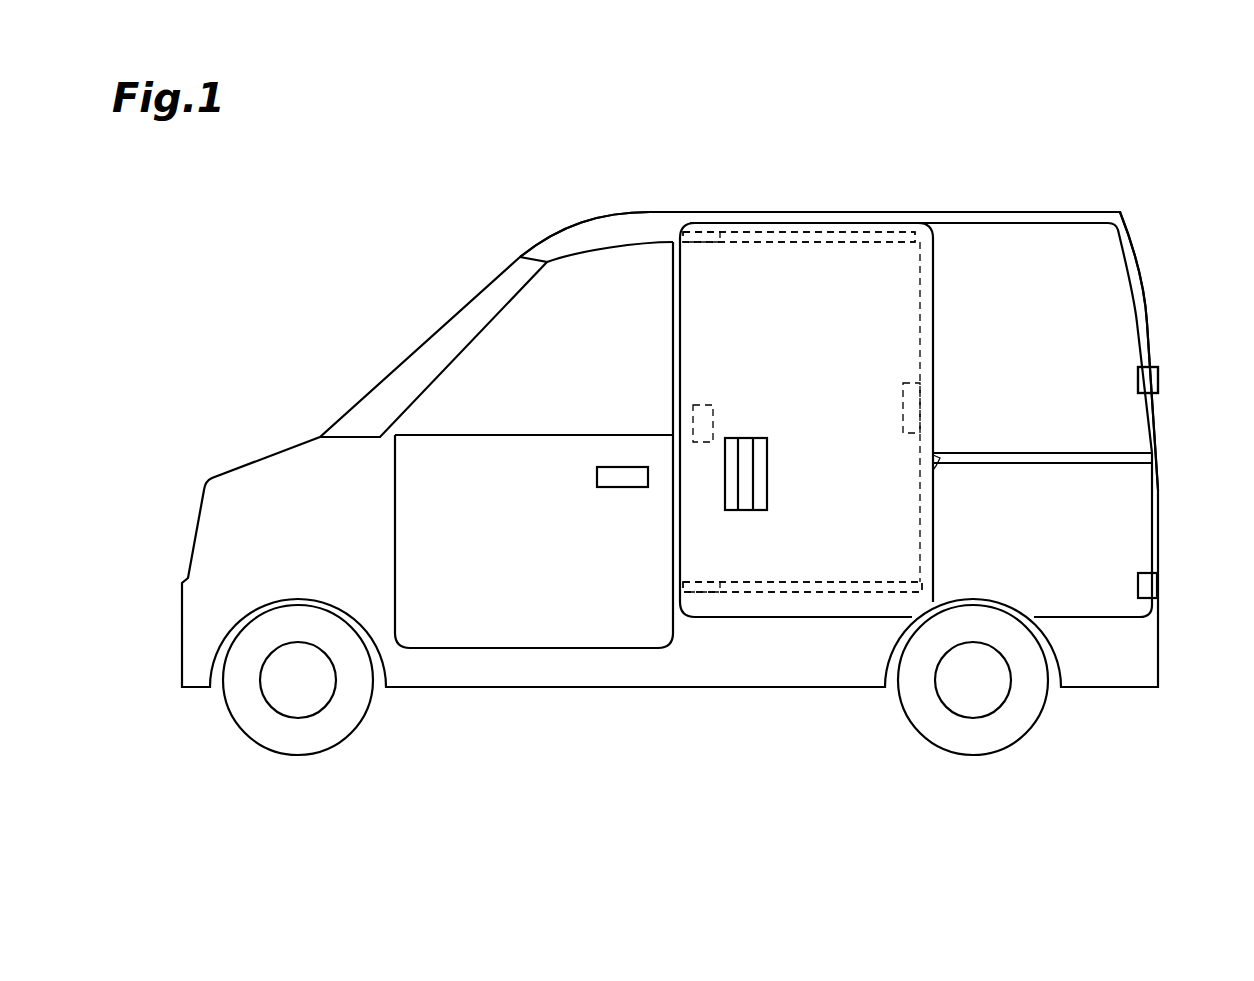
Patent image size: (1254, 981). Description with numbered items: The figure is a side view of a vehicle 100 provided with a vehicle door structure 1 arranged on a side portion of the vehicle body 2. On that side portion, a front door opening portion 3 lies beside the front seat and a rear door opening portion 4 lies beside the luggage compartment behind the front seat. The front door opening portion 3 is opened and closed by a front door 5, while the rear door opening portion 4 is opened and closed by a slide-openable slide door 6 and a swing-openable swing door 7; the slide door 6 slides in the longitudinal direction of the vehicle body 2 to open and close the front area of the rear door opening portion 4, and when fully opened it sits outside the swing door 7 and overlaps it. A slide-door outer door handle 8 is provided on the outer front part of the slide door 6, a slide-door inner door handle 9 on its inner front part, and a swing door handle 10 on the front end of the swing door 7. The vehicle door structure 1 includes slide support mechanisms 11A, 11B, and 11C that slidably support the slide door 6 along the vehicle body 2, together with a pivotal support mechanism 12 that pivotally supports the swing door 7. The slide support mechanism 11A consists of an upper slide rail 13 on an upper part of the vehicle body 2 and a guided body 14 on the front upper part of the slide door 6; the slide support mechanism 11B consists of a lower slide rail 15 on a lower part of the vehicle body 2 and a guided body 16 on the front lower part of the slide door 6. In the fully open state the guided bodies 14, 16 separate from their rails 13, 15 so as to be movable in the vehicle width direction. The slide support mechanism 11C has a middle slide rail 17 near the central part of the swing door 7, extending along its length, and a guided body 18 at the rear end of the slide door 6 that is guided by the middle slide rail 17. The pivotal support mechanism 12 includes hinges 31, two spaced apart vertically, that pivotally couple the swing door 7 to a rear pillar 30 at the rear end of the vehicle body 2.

The vehicle 100 is at (1148, 190).
The vehicle door structure 1 is at (988, 216).
The vehicle body 2 is at (655, 222).
The front door opening portion 3 is at (617, 248).
The rear door opening portion 4 is at (1040, 226).
The front door 5 is at (520, 612).
The slide door 6 is at (815, 562).
The swing door 7 is at (1098, 513).
The slide-door outer door handle 8 is at (760, 468).
The slide-door inner door handle 9 is at (708, 424).
The swing door handle 10 is at (898, 398).
The slide support mechanism 11A is at (873, 235).
The slide support mechanism 11B is at (747, 596).
The slide support mechanism 11C is at (1000, 452).
The pivotal support mechanism 12 is at (1159, 364).
The upper slide rail 13 is at (830, 232).
The guided body 14 is at (706, 238).
The lower slide rail 15 is at (840, 594).
The guided body 16 is at (708, 590).
The middle slide rail 17 is at (1038, 455).
The guided body 18 is at (935, 478).
The rear pillar 30 is at (1143, 288).
The hinge 31 is at (1159, 378).